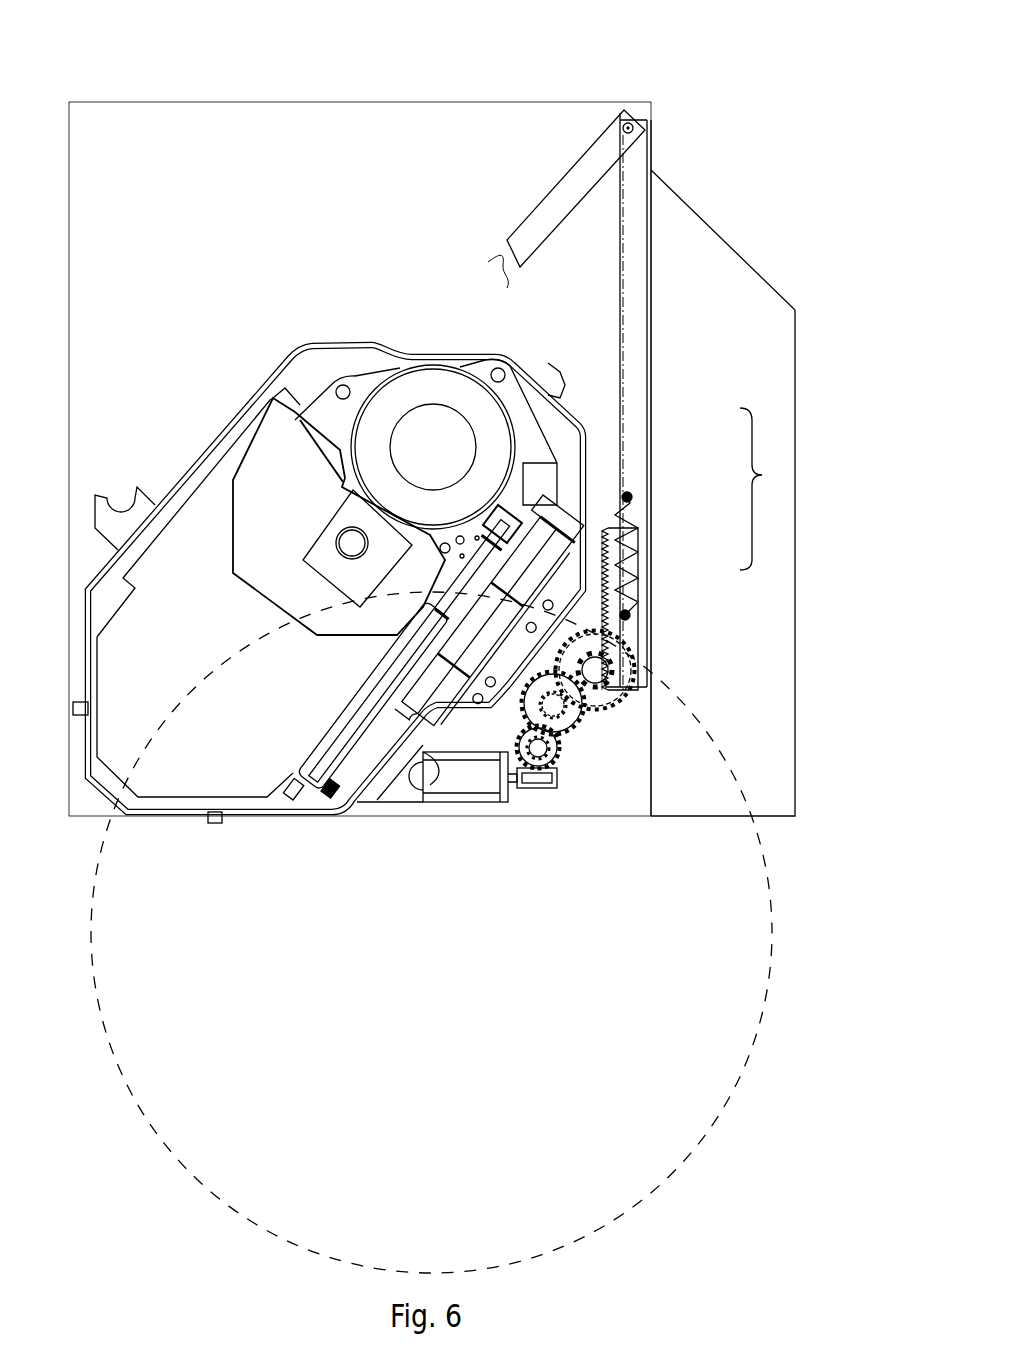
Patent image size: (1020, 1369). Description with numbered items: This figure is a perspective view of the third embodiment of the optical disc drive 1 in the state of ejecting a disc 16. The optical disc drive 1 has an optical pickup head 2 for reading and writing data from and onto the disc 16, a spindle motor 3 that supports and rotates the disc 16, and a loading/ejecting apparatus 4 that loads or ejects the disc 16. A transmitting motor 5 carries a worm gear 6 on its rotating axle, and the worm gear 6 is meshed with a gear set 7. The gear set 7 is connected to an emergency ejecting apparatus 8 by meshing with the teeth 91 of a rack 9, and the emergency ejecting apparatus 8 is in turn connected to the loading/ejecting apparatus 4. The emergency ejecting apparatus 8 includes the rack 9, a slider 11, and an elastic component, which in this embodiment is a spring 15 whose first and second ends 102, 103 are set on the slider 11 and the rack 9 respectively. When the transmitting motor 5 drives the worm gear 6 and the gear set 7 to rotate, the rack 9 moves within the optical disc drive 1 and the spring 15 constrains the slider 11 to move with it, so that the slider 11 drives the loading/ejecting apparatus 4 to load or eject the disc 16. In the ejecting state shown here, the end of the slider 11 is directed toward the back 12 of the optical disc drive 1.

The optical disc drive 1 is at (738, 185).
The optical pickup head 2 is at (240, 590).
The spindle motor 3 is at (430, 404).
The loading/ejecting apparatus 4 is at (527, 222).
The transmitting motor 5 is at (452, 806).
The worm gear 6 is at (536, 790).
The gear set 7 is at (580, 736).
The emergency ejecting apparatus 8 is at (763, 475).
The rack 9 is at (615, 528).
The slider 11 is at (626, 413).
The back 12 is at (545, 102).
The spring 15 is at (622, 560).
The disc 16 is at (150, 746).
The teeth 91 is at (603, 632).
The first end 102 is at (632, 495).
The second end 103 is at (630, 613).